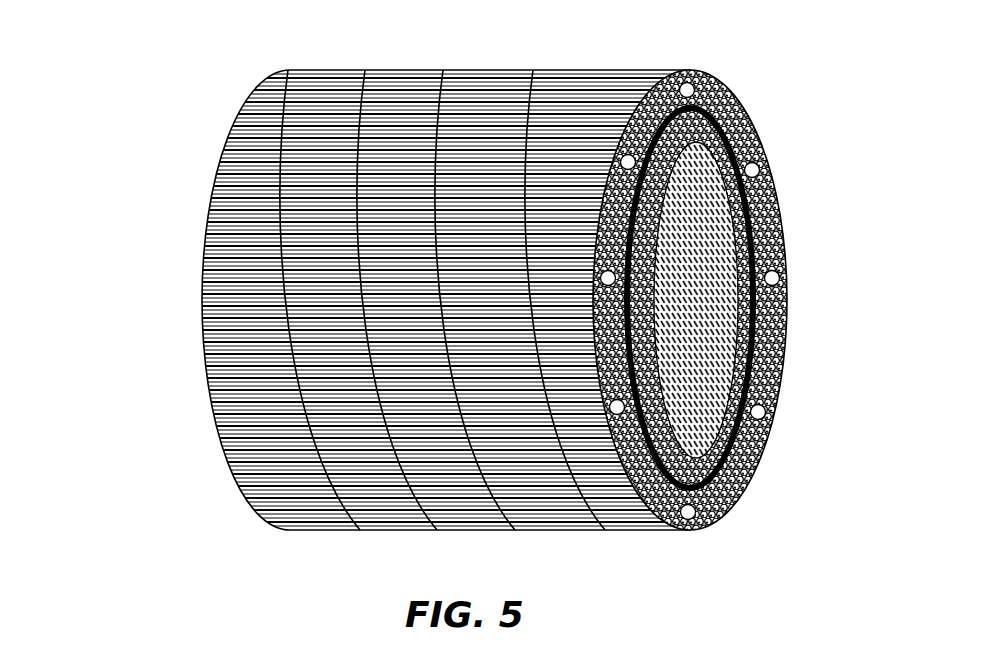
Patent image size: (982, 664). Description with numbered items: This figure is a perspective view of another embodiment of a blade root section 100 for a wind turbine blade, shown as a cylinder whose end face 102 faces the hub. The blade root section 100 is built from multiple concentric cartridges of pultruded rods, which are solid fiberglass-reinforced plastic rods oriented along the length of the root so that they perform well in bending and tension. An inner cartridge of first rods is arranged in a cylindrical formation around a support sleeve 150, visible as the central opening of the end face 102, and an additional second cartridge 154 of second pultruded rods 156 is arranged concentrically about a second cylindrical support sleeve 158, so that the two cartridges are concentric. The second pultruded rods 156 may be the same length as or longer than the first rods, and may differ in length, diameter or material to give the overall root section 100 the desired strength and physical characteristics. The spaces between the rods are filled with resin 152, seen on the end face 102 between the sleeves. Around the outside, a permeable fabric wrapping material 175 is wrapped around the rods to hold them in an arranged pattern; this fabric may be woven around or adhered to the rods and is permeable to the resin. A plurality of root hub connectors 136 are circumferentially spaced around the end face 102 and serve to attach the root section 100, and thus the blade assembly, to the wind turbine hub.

The blade root section 100 is at (150, 202).
The end face 102 is at (782, 360).
The root hub connectors 136 is at (690, 514).
The support sleeve 150 is at (696, 300).
The resin 152 is at (772, 195).
The second cartridge 154 is at (591, 85).
The second pultruded rods 156 is at (741, 111).
The second cylindrical support sleeve 158 is at (781, 240).
The permeable fabric wrapping material 175 is at (278, 103).